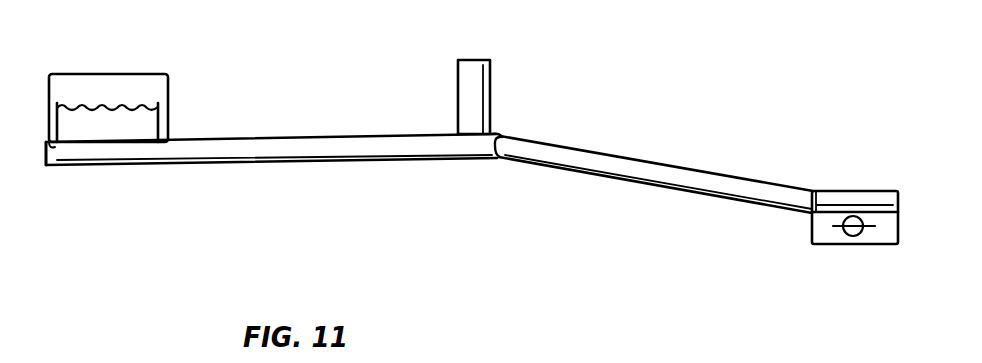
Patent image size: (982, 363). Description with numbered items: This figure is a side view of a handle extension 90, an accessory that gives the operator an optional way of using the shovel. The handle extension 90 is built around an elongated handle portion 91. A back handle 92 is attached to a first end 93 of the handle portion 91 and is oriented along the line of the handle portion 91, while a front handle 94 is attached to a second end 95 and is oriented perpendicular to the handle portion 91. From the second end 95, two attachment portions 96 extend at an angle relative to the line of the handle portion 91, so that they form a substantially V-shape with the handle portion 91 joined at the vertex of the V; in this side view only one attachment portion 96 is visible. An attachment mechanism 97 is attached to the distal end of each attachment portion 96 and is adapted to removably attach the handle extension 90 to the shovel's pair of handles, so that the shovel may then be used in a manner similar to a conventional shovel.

The handle extension 90 is at (308, 97).
The handle portion 91 is at (221, 147).
The back handle 92 is at (135, 88).
The first end 93 is at (66, 182).
The front handle 94 is at (478, 67).
The second end 95 is at (479, 167).
The attachment portion 96 is at (603, 151).
The attachment mechanism 97 is at (830, 246).